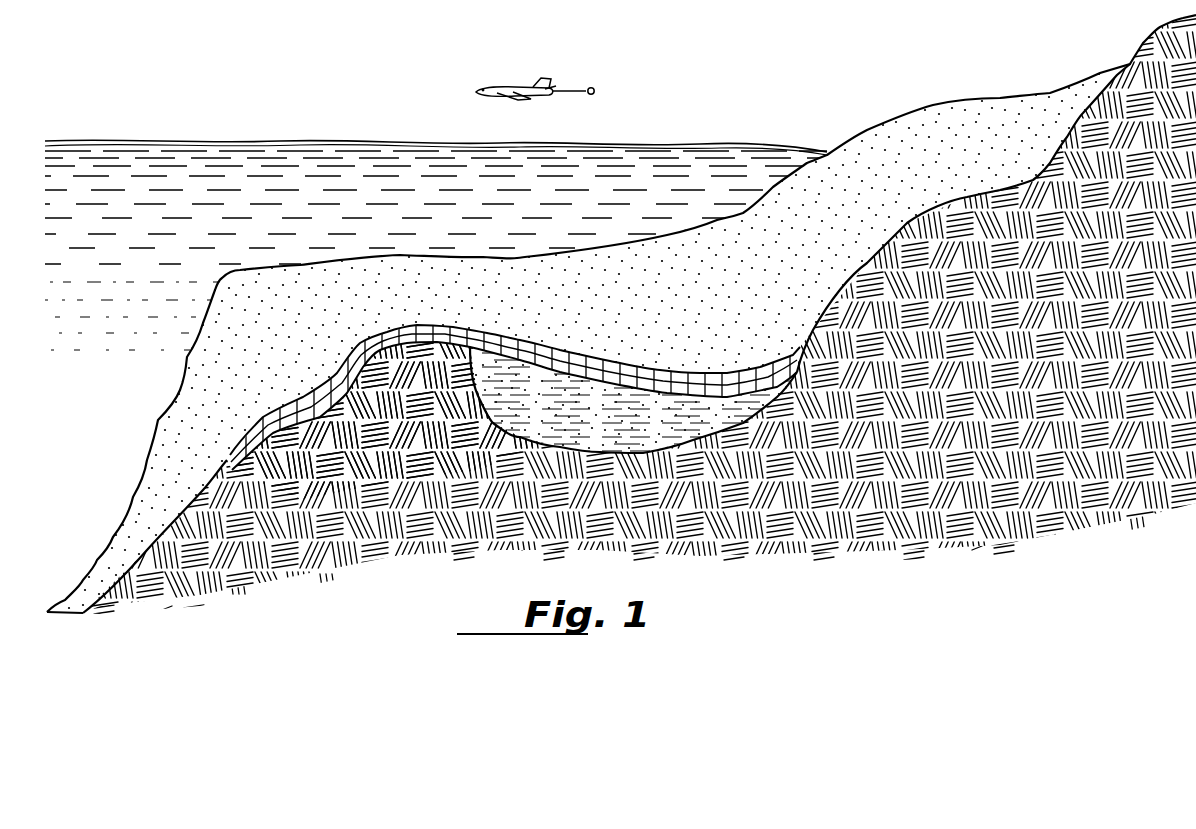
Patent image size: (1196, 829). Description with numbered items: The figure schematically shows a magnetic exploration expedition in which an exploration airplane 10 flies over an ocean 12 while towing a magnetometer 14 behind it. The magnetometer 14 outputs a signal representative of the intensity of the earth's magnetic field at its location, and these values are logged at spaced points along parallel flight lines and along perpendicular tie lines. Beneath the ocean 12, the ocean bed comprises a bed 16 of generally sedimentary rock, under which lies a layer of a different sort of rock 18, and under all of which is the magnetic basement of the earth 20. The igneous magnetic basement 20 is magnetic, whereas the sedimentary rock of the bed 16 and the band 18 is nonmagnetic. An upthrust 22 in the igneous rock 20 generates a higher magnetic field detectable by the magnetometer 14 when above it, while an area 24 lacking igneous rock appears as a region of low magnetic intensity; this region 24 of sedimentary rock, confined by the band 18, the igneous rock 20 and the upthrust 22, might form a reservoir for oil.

The exploration airplane 10 is at (487, 87).
The ocean 12 is at (200, 214).
The magnetometer 14 is at (600, 89).
The bed of sedimentary rock 16 is at (771, 260).
The layer of different rock 18 is at (612, 374).
The magnetic basement 20 is at (832, 476).
The upthrust 22 is at (427, 392).
The region of sedimentary rock 24 is at (558, 414).